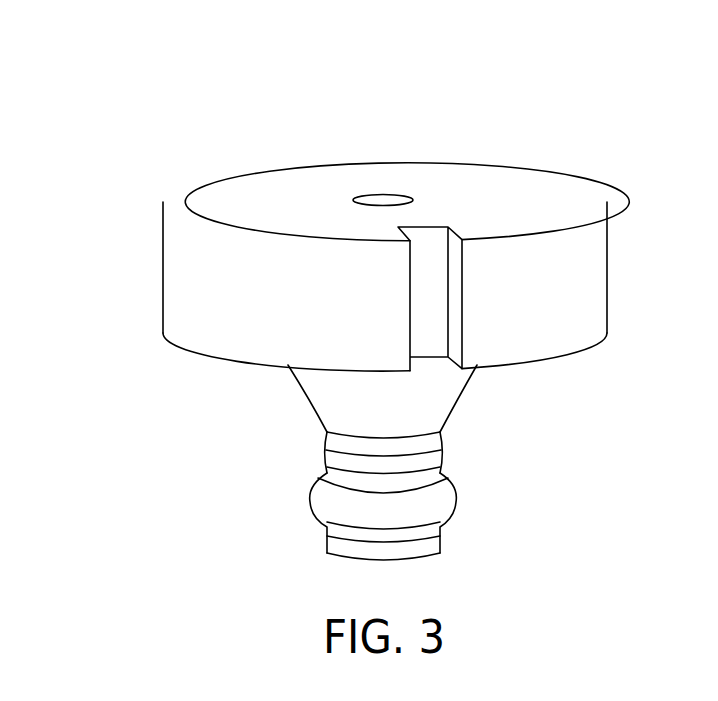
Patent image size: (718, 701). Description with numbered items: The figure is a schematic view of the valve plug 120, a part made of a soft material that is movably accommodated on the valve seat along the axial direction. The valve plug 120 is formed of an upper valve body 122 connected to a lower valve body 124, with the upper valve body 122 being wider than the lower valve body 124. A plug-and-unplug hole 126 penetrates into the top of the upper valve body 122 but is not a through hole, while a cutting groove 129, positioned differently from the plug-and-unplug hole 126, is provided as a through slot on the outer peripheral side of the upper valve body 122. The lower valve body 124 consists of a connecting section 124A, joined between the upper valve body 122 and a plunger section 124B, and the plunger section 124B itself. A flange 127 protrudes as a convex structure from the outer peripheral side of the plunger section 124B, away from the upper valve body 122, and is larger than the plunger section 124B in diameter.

The valve plug 120 is at (570, 83).
The upper valve body 122 is at (597, 283).
The lower valve body 124 is at (494, 438).
The connecting section 124A is at (318, 402).
The plunger section 124B is at (328, 457).
The plug-and-unplug hole 126 is at (377, 193).
The flange 127 is at (449, 501).
The cutting groove 129 is at (436, 222).